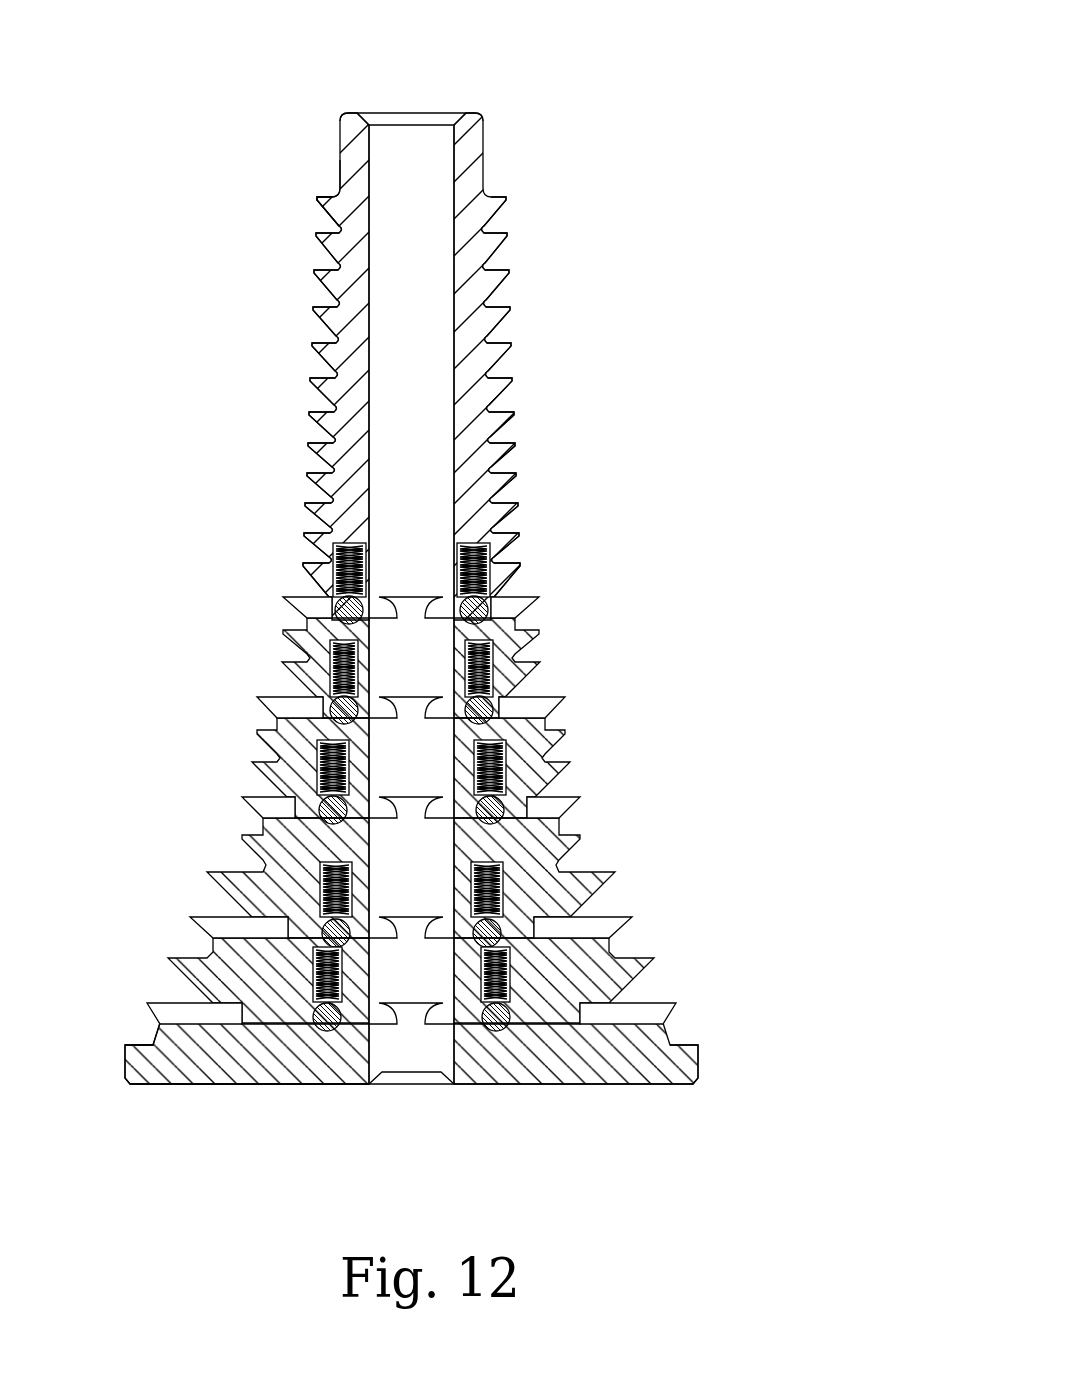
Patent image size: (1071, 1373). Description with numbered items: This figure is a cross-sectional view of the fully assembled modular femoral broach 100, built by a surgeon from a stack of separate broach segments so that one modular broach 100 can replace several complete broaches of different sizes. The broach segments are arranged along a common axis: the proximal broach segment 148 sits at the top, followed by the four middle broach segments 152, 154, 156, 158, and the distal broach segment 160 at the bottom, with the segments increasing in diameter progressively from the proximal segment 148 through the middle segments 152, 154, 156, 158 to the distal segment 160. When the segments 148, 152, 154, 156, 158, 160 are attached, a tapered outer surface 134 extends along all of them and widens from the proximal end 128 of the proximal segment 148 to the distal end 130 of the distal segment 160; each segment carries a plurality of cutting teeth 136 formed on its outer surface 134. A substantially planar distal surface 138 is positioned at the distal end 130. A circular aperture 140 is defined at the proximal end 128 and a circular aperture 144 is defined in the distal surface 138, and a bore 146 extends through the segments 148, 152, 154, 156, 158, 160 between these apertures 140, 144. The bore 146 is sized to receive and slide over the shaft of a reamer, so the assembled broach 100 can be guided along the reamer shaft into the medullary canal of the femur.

The modular femoral broach 100 is at (473, 573).
The proximal end 128 is at (540, 116).
The distal end 130 is at (800, 1088).
The outer surface 134 is at (330, 194).
The cutting teeth 136 is at (300, 290).
The distal surface 138 is at (162, 1086).
The circular aperture 140 is at (372, 114).
The circular aperture 144 is at (385, 1085).
The bore 146 is at (405, 108).
The proximal broach segment 148 is at (546, 331).
The middle broach segment 152 is at (588, 601).
The middle broach segment 154 is at (623, 741).
The middle broach segment 156 is at (663, 873).
The middle broach segment 158 is at (688, 977).
The distal broach segment 160 is at (741, 1028).